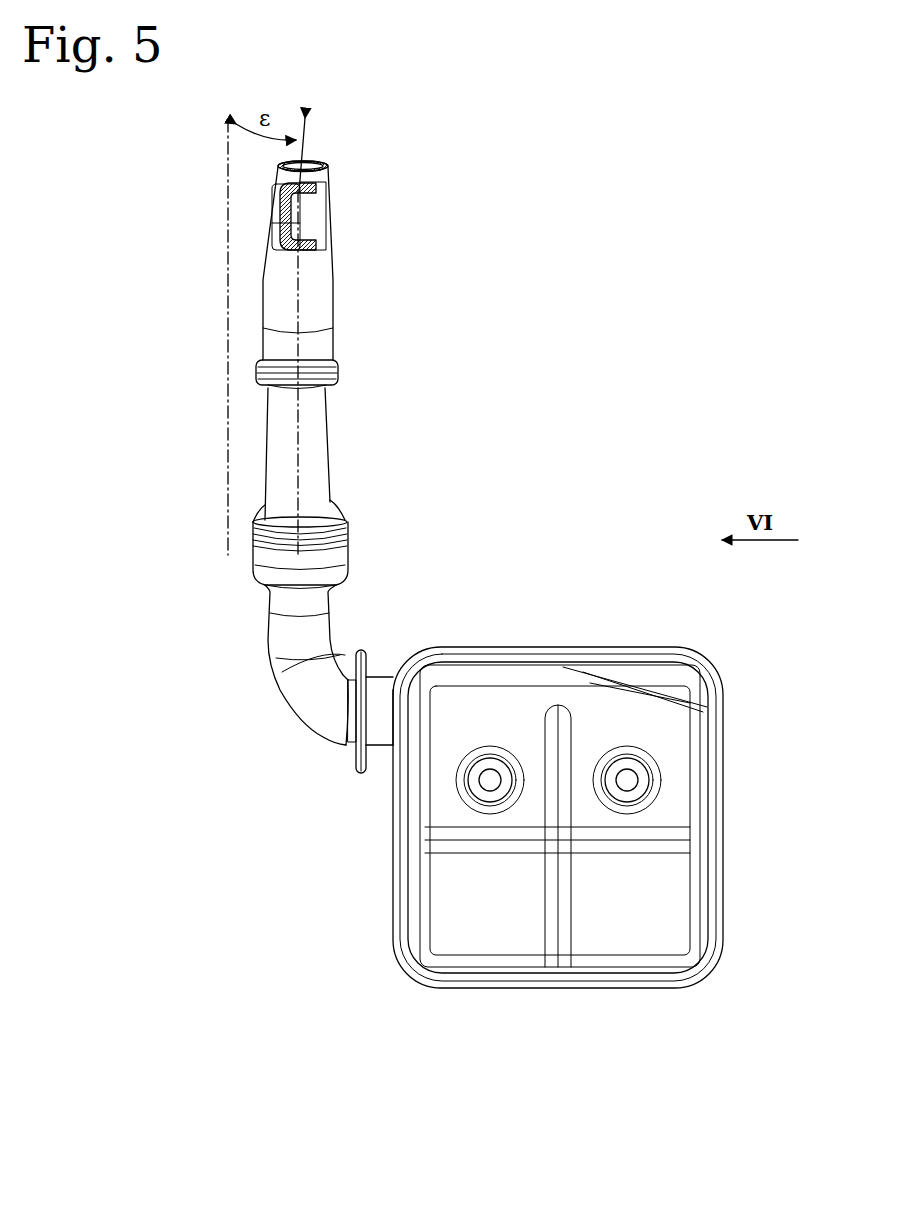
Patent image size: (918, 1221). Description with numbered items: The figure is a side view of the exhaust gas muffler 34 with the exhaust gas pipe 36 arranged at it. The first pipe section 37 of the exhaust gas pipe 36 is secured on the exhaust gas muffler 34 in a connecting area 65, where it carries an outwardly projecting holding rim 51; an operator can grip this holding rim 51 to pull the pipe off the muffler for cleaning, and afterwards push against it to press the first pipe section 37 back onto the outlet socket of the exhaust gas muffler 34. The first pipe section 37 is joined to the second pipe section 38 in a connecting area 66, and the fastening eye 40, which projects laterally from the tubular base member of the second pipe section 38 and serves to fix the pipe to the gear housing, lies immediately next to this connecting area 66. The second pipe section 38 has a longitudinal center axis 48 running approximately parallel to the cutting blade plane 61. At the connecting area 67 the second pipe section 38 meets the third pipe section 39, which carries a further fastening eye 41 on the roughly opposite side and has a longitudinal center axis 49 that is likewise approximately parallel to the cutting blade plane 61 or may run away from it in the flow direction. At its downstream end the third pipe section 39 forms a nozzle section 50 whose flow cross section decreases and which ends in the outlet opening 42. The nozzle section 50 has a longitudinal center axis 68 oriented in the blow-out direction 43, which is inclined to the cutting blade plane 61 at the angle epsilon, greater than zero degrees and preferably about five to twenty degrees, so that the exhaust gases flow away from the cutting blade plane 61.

The exhaust gas muffler 34 is at (685, 738).
The exhaust gas pipe 36 is at (254, 448).
The first pipe section 37 is at (295, 680).
The second pipe section 38 is at (317, 436).
The third pipe section 39 is at (313, 280).
The fastening eye 40 is at (340, 510).
The fastening eye 41 is at (278, 223).
The outlet opening 42 is at (315, 162).
The blow-out direction 43 is at (306, 148).
The longitudinal center axis 48 is at (300, 463).
The longitudinal center axis 49 is at (298, 335).
The nozzle section 50 is at (322, 188).
The holding rim 51 is at (357, 757).
The cutting blade plane 61 is at (228, 282).
The connecting area 65 is at (392, 646).
The connecting area 66 is at (352, 523).
The connecting area 67 is at (348, 362).
The longitudinal center axis 68 is at (307, 175).